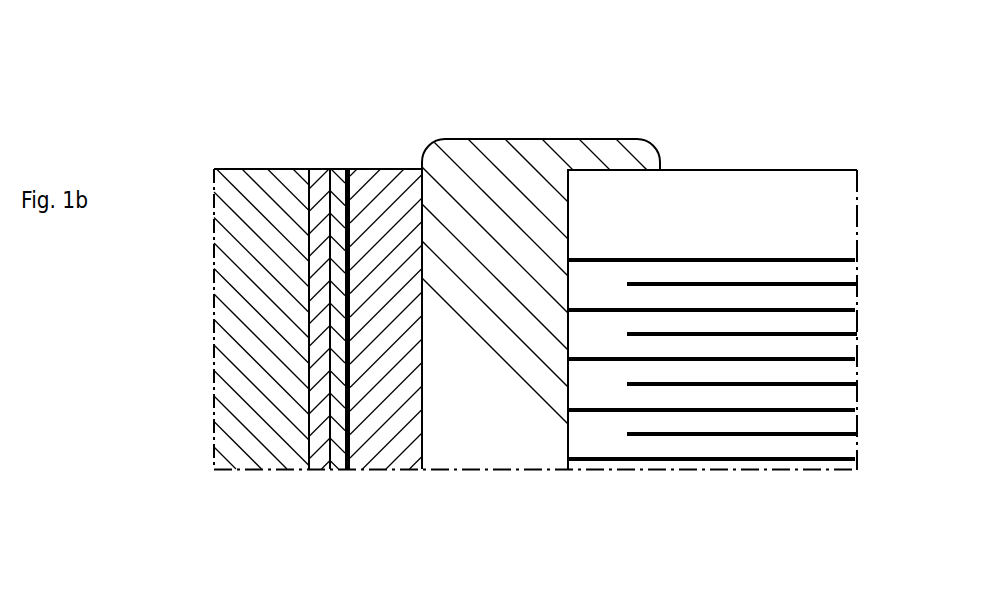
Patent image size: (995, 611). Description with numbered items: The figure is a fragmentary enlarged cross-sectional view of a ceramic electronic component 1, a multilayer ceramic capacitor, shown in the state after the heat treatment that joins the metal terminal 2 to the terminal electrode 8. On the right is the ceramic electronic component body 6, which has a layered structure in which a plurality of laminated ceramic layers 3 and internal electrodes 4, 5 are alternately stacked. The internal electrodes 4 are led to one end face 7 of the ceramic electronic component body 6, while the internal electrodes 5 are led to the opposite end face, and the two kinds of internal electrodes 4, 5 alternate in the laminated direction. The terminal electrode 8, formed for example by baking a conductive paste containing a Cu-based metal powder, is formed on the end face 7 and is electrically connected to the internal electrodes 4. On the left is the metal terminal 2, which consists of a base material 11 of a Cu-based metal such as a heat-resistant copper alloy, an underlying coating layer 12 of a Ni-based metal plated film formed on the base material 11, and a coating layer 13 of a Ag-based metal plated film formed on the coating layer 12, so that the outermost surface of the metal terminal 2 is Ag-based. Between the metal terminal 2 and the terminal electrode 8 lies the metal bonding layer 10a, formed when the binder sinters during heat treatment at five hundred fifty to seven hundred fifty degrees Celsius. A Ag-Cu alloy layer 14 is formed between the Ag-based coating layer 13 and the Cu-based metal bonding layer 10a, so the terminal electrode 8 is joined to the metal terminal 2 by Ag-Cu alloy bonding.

The ceramic electronic component 1 is at (771, 49).
The metal terminal 2 is at (348, 166).
The laminated ceramic layers 3 is at (748, 422).
The internal electrodes 4 is at (726, 310).
The internal electrodes 5 is at (827, 333).
The ceramic electronic component body 6 is at (853, 170).
The end face 7 is at (565, 423).
The terminal electrode 8 is at (530, 153).
The metal bonding layer 10a is at (390, 168).
The base material 11 is at (248, 462).
The coating layer 12 is at (318, 464).
The coating layer 13 is at (330, 468).
The Ag-Cu alloy layer 14 is at (349, 417).